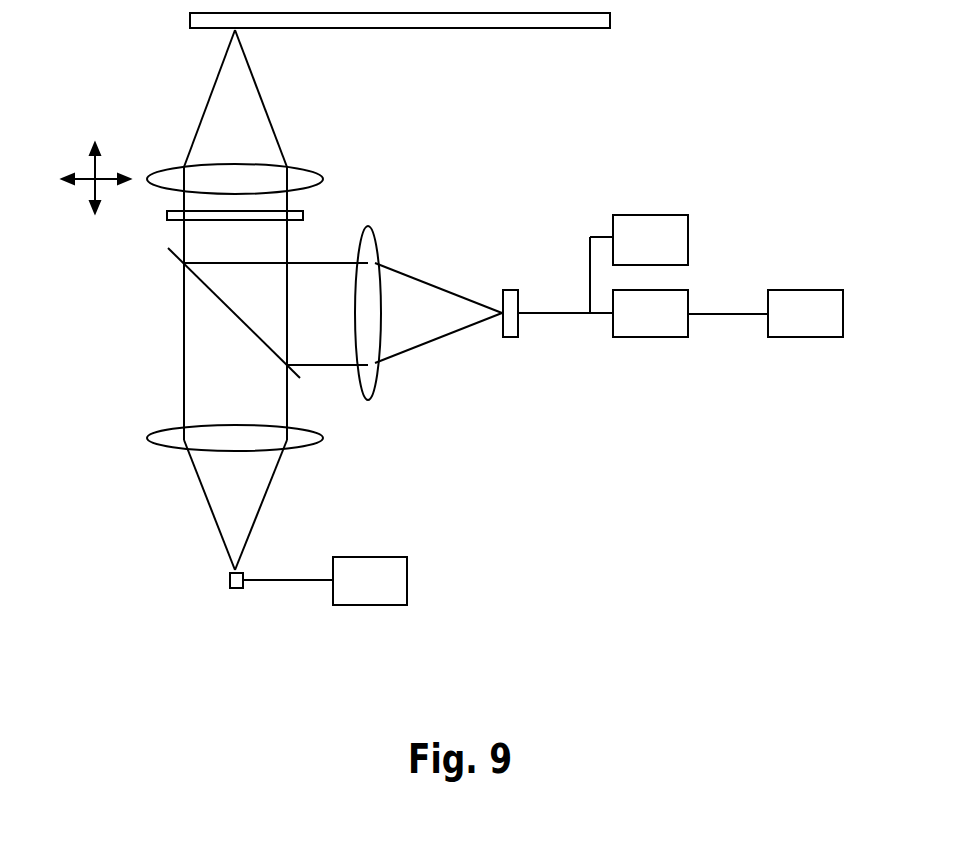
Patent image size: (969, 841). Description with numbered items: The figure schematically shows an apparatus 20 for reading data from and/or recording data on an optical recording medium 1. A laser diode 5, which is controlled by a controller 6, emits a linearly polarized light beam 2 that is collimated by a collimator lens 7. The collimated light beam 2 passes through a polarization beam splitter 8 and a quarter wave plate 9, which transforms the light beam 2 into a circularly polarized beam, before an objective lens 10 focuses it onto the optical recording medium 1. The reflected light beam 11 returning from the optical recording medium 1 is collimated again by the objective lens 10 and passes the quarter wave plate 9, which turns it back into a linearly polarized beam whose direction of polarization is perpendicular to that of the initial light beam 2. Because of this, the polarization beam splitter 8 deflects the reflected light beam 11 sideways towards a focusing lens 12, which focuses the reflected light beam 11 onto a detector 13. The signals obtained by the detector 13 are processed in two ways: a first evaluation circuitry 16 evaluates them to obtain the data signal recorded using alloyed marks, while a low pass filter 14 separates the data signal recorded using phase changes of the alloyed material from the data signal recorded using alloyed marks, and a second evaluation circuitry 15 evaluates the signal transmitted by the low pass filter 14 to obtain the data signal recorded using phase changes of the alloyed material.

The optical recording medium 1 is at (612, 30).
The light beam 2 is at (207, 512).
The laser diode 5 is at (227, 582).
The controller 6 is at (367, 608).
The collimator lens 7 is at (140, 445).
The polarization beam splitter 8 is at (172, 257).
The quarter wave plate 9 is at (310, 213).
The objective lens 10 is at (167, 163).
The reflected light beam 11 is at (427, 343).
The focusing lens 12 is at (382, 377).
The detector 13 is at (522, 330).
The low pass filter 14 is at (673, 345).
The second evaluation circuitry 15 is at (793, 287).
The first evaluation circuitry 16 is at (692, 233).
The apparatus 20 is at (530, 475).